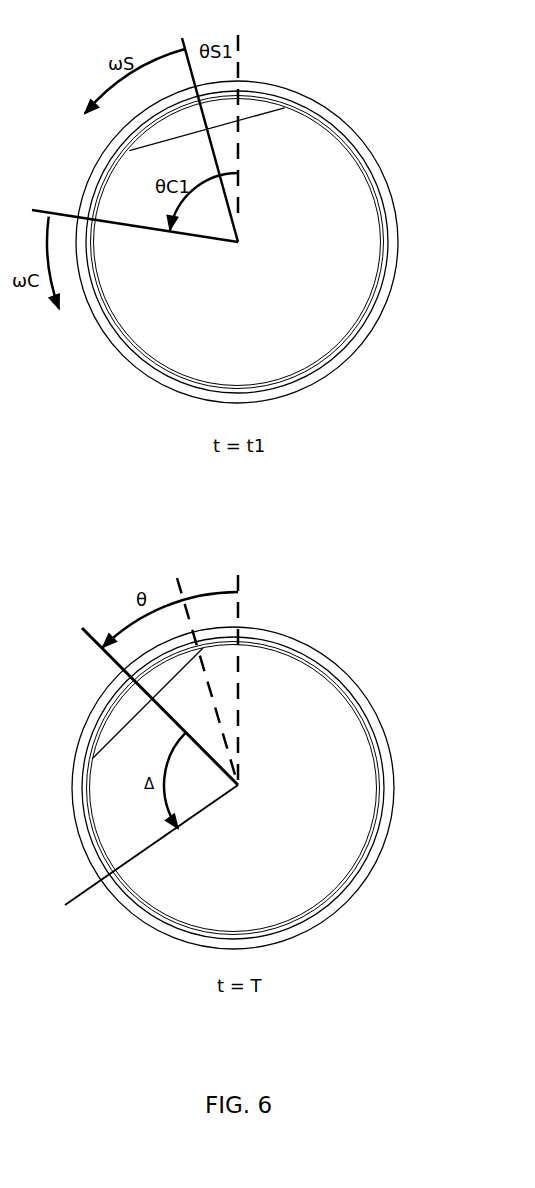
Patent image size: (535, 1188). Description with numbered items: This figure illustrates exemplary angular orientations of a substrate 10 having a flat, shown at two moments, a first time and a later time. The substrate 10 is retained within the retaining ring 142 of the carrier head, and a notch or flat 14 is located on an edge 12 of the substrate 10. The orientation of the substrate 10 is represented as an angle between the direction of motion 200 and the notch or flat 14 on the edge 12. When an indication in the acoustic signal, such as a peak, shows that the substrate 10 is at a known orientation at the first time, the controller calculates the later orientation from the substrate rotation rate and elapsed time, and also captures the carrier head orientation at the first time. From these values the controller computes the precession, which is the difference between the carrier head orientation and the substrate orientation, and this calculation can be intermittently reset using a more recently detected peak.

The substrate 10 is at (360, 244).
The edge 12 is at (333, 137).
The notch or flat 14 is at (270, 108).
The retaining ring 142 is at (132, 352).
The direction of motion 200 is at (240, 42).